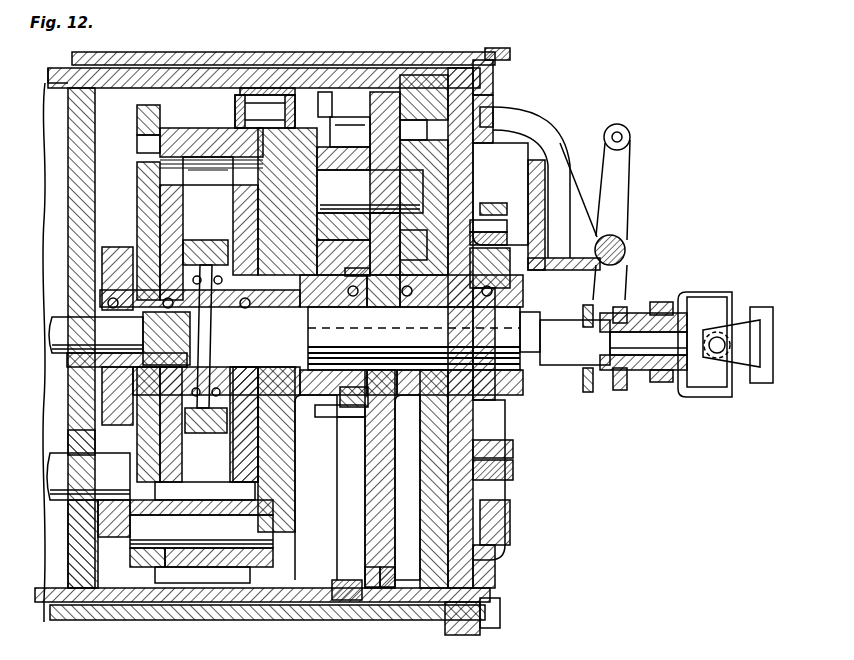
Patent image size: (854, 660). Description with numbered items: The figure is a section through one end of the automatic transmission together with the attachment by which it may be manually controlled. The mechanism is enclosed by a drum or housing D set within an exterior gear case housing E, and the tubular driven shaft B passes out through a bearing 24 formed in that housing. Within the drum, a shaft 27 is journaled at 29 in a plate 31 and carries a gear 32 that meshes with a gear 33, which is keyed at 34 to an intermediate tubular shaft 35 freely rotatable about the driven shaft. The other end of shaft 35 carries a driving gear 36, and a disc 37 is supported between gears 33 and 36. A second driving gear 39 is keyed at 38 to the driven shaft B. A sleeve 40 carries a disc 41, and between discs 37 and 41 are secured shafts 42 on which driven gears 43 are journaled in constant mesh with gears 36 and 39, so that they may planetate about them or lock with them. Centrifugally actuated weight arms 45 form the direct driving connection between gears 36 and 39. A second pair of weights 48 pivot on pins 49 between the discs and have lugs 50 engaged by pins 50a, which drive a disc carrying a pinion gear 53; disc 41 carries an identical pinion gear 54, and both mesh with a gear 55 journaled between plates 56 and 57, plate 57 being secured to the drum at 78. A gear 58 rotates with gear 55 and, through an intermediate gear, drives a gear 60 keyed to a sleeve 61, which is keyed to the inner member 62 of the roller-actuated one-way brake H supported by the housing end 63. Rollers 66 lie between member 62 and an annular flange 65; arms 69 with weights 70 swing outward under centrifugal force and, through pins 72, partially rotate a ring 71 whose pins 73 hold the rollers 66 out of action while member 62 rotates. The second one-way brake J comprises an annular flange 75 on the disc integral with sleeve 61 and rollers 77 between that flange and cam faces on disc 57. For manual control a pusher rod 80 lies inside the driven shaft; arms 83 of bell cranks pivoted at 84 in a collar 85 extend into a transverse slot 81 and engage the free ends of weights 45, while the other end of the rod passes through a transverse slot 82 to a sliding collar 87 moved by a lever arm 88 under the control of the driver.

The bearing 24 is at (452, 400).
The shaft 27 is at (70, 470).
The journal 29 is at (72, 437).
The plate 31 is at (76, 148).
The gear 32 is at (100, 515).
The gear 33 is at (108, 262).
The key 34 is at (108, 302).
The intermediate tubular shaft 35 is at (100, 362).
The gear 36 is at (168, 180).
The disc 37 is at (148, 107).
The key 38 is at (424, 338).
The gear 39 is at (300, 180).
The sleeve 40 is at (361, 299).
The disc 41 is at (267, 437).
The shafts 42 is at (170, 555).
The gear 43 is at (200, 577).
The centrifugally actuated weight arm 45 is at (205, 316).
The centrifugally actuated weights 48 is at (211, 138).
The pins 49 is at (140, 142).
The lugs 50 is at (248, 90).
The pins 50a is at (238, 110).
The pinion gear 53 is at (364, 479).
The pinion gear 54 is at (332, 448).
The gear 55 is at (334, 118).
The plate 56 is at (325, 117).
The plate 57 is at (388, 95).
The gear 58 is at (420, 130).
The gear 60 is at (443, 310).
The sleeve 61 is at (440, 172).
The inner member 62 is at (495, 262).
The end of gear case housing 63 is at (478, 80).
The annular flange 65 is at (500, 194).
The rollers 66 is at (505, 222).
The arms 69 is at (512, 472).
The weights 70 is at (520, 516).
The ring 71 is at (500, 207).
The pins 72 is at (512, 455).
The pins 73 is at (505, 236).
The annular flange 75 is at (387, 590).
The rollers 77 is at (372, 588).
The securing means 78 is at (345, 582).
The pusher rod 80 is at (588, 392).
The transverse slot 81 is at (232, 262).
The transverse slot 82 is at (578, 320).
The arms of bell cranks 83 is at (143, 336).
The pivot 84 is at (194, 277).
The collar 85 is at (215, 277).
The sliding collar 87 is at (602, 398).
The lever arm 88 is at (630, 198).
The driven shaft B is at (640, 318).
The drum or housing D is at (108, 614).
The exterior housing E is at (250, 634).
The brake H is at (512, 185).
The one-way brake J is at (358, 549).